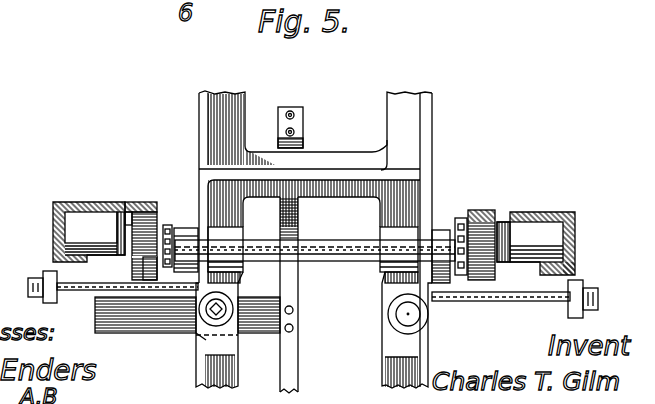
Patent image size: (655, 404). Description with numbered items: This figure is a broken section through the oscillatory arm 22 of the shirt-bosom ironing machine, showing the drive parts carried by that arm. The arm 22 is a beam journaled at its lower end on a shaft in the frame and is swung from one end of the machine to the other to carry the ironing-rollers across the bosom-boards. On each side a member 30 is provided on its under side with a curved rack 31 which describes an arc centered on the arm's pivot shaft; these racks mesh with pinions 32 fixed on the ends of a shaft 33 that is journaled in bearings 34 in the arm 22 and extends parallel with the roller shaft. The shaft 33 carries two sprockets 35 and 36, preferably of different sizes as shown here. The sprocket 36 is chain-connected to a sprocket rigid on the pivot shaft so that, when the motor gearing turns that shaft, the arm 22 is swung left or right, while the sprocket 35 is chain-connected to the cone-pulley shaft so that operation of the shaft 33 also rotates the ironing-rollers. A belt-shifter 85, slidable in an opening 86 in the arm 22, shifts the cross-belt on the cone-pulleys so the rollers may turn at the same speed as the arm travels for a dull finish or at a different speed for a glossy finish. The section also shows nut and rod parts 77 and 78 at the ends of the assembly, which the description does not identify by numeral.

The arm 22 is at (238, 118).
The rack-carrying member 30 is at (130, 203).
The curved rack 31 is at (136, 205).
The pinion 32 is at (147, 267).
The shaft 33 is at (345, 262).
The bearing 34 is at (236, 238).
The sprocket 35 is at (172, 224).
The sprocket 36 is at (460, 218).
The nut 77 is at (46, 305).
The rod 78 is at (82, 292).
The belt-shifter 85 is at (120, 333).
The opening 86 is at (196, 340).